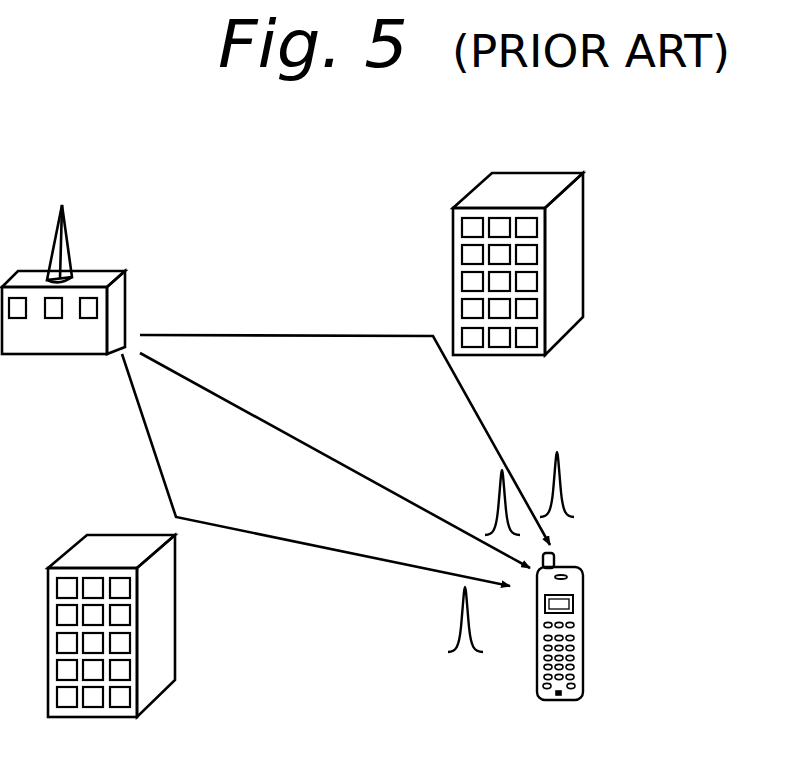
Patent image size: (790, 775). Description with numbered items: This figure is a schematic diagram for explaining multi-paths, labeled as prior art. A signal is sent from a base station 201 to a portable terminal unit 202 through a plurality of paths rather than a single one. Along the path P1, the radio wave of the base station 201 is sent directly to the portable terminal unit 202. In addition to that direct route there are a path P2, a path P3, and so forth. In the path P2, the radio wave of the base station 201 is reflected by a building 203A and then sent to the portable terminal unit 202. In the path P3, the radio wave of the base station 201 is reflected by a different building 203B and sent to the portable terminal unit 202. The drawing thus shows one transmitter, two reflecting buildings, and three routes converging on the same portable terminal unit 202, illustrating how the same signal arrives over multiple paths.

The base station 201 is at (118, 270).
The portable terminal unit 202 is at (577, 645).
The building 203A is at (83, 555).
The building 203B is at (560, 247).
The path P1 is at (342, 463).
The path P2 is at (148, 435).
The path P3 is at (478, 410).